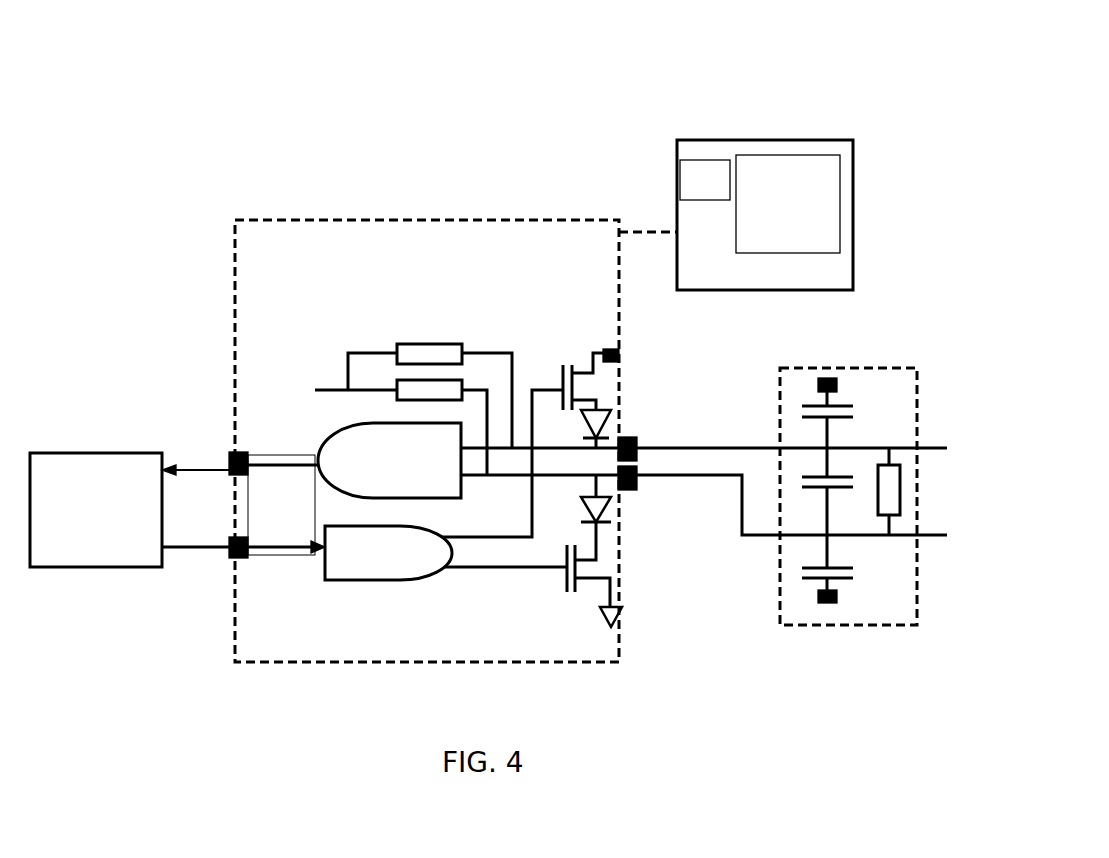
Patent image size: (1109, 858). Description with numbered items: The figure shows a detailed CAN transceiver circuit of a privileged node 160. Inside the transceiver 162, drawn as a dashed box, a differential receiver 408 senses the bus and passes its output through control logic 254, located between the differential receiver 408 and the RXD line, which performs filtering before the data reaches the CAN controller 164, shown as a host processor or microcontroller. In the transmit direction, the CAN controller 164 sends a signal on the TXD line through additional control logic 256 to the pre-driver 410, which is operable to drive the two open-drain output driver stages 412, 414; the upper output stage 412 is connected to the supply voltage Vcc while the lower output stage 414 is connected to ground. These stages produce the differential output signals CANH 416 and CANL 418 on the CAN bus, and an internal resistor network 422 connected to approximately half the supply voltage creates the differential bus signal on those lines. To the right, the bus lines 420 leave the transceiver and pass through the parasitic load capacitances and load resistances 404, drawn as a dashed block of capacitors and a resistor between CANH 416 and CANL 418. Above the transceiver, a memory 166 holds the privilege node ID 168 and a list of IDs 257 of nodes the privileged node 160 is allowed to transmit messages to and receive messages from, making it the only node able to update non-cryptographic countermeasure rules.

The privileged node 160 is at (205, 140).
The CAN transceiver 162 is at (235, 272).
The CAN controller 164 is at (125, 453).
The memory 166 is at (765, 140).
The privilege node ID 168 is at (705, 180).
The list of IDs 257 is at (810, 243).
The control logic 254 is at (240, 469).
The additional control logic 256 is at (243, 539).
The parasitic load capacitances and load resistances 404 is at (845, 368).
The differential receiver 408 is at (320, 447).
The pre-driver 410 is at (355, 583).
The transceiver circuit output driver stage 412 is at (575, 363).
The transceiver circuit output driver stage 414 is at (558, 582).
The CANH 416 is at (685, 408).
The CANL 418 is at (661, 516).
The CAN bus lines 420 is at (780, 448).
The internal resistor network 422 is at (445, 337).